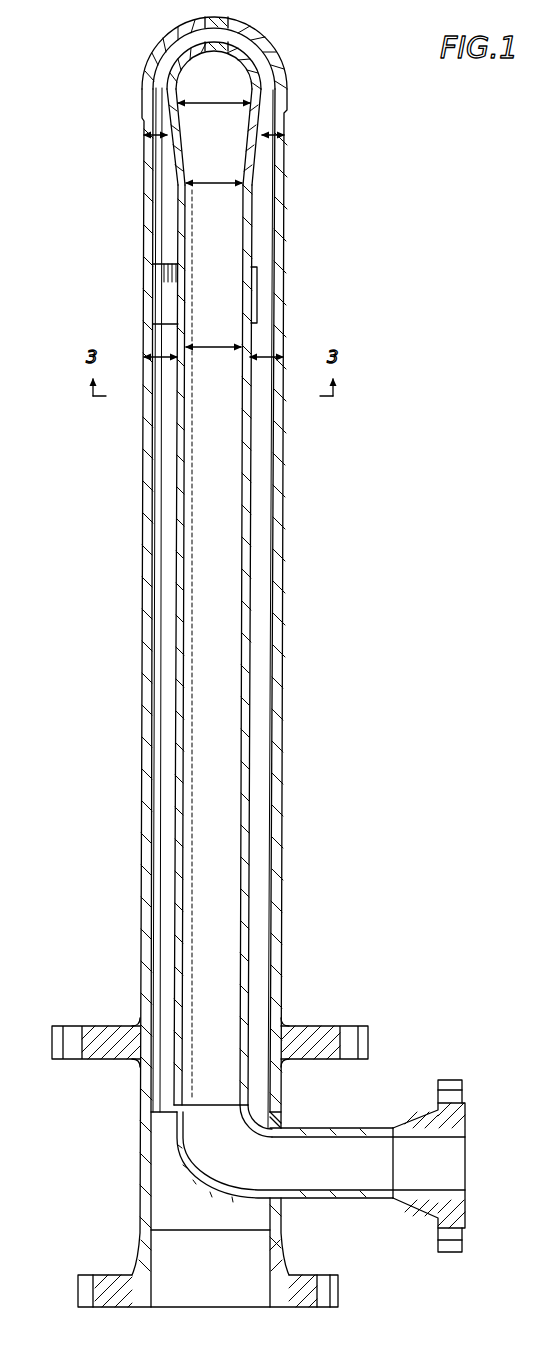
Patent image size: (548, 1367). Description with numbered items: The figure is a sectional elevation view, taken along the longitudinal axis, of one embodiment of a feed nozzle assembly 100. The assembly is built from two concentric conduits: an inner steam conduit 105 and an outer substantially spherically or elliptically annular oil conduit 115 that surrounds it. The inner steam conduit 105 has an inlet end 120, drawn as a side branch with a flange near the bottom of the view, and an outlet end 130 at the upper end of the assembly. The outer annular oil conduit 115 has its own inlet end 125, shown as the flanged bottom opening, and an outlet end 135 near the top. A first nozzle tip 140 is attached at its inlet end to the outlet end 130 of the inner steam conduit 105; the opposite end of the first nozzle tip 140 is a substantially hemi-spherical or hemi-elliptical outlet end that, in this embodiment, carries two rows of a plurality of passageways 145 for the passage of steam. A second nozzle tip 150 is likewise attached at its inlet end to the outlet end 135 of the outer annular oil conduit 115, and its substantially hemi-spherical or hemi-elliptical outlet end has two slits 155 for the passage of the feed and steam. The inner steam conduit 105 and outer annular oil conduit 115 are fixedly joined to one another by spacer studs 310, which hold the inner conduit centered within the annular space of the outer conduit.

The feed nozzle assembly 100 is at (437, 258).
The inner steam conduit 105 is at (178, 608).
The outer annular oil conduit 115 is at (143, 542).
The inlet end 120 is at (452, 1168).
The inlet end 125 is at (222, 1297).
The outlet end 130 is at (233, 205).
The outlet end 135 is at (285, 258).
The first nozzle tip 140 is at (168, 91).
The passageways 145 is at (203, 25).
The second nozzle tip 150 is at (287, 98).
The slits 155 is at (230, 13).
The spacer studs 310 is at (162, 293).